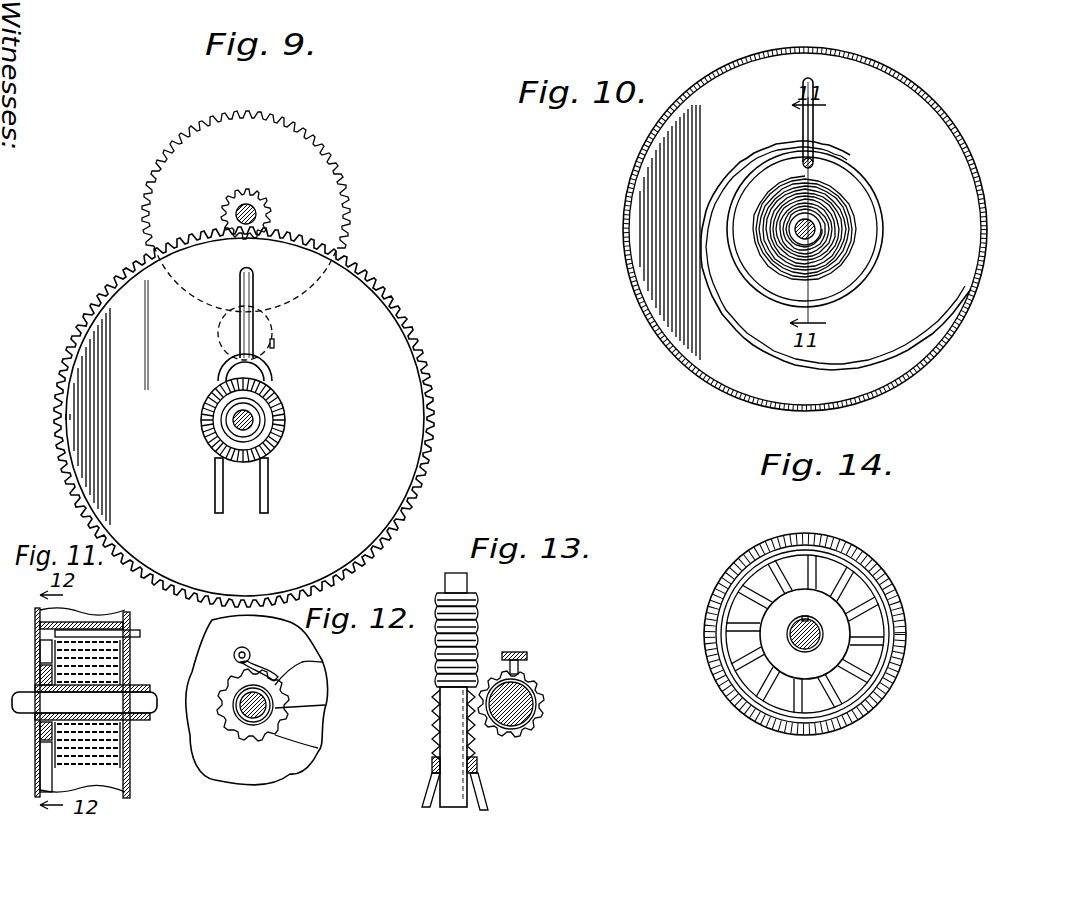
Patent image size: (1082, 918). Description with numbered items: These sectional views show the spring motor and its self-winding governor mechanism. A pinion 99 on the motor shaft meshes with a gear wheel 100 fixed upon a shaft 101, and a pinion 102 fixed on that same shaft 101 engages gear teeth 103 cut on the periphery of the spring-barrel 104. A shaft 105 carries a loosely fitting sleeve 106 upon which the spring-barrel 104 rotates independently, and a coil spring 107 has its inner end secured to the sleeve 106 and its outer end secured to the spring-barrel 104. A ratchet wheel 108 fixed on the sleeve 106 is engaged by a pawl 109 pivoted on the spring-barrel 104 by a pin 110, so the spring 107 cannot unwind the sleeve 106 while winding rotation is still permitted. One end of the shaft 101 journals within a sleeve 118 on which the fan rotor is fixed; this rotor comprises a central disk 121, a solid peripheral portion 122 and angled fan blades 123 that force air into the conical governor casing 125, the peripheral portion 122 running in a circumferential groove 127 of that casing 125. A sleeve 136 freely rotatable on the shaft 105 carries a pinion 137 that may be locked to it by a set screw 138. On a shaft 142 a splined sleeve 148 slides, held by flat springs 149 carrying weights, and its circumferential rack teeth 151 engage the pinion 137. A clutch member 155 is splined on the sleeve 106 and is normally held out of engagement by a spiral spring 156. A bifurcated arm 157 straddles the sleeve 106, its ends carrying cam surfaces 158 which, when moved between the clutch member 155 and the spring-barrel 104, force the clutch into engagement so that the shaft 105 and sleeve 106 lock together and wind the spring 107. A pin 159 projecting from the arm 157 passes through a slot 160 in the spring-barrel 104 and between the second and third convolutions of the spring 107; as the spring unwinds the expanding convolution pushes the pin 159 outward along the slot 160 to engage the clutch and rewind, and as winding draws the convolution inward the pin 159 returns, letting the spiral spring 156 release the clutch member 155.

In FIG. 9, the pinion 99 is at (253, 348).
In FIG. 9, the gear wheel 100 is at (296, 122).
In FIG. 9, the shaft 101 is at (258, 212).
In FIG. 14, the shaft 101 is at (823, 632).
In FIG. 9, the pinion 102 is at (249, 189).
In FIG. 9, the gear teeth 103 is at (387, 297).
In FIG. 9, the spring-barrel 104 is at (393, 367).
In FIG. 10, the spring-barrel 104 is at (987, 177).
In FIG. 11, the spring-barrel 104 is at (35, 612).
In FIG. 12, the spring-barrel 104 is at (313, 687).
In FIG. 9, the shaft 105 is at (267, 417).
In FIG. 10, the shaft 105 is at (816, 223).
In FIG. 11, the shaft 105 is at (143, 697).
In FIG. 12, the shaft 105 is at (273, 708).
In FIG. 13, the shaft 105 is at (525, 703).
In FIG. 9, the sleeve 106 is at (267, 397).
In FIG. 10, the sleeve 106 is at (818, 241).
In FIG. 11, the sleeve 106 is at (140, 687).
In FIG. 12, the sleeve 106 is at (272, 690).
In FIG. 10, the coil spring 107 is at (742, 318).
In FIG. 12, the coil spring 107 is at (190, 766).
In FIG. 11, the ratchet wheel 108 is at (40, 737).
In FIG. 12, the ratchet wheel 108 is at (280, 735).
In FIG. 11, the pawl 109 is at (40, 655).
In FIG. 12, the pawl 109 is at (255, 658).
In FIG. 11, the pin 110 is at (38, 633).
In FIG. 12, the pin 110 is at (243, 647).
In FIG. 14, the sleeve 118 is at (823, 627).
In FIG. 14, the central disk 121 is at (837, 653).
In FIG. 14, the solid peripheral portion 122 is at (837, 555).
In FIG. 14, the fan blades 123 is at (850, 580).
In FIG. 14, the governor casing 125 is at (880, 695).
In FIG. 14, the circumferential groove 127 is at (787, 540).
In FIG. 13, the sleeve 136 is at (540, 677).
In FIG. 13, the pinion 137 is at (543, 727).
In FIG. 13, the set screw 138 is at (528, 655).
In FIG. 13, the shaft 142 is at (463, 787).
In FIG. 13, the sleeve 148 is at (433, 753).
In FIG. 13, the flat springs 149 is at (428, 790).
In FIG. 13, the rack teeth 151 is at (478, 637).
In FIG. 9, the clutch member 155 is at (287, 443).
In FIG. 9, the spiral spring 156 is at (233, 427).
In FIG. 9, the bifurcated arm 157 is at (220, 374).
In FIG. 9, the cam surfaces 158 is at (215, 493).
In FIG. 9, the pin 159 is at (283, 327).
In FIG. 10, the pin 159 is at (813, 160).
In FIG. 11, the pin 159 is at (140, 633).
In FIG. 9, the slot 160 is at (240, 281).
In FIG. 10, the slot 160 is at (803, 128).
In FIG. 11, the slot 160 is at (131, 610).